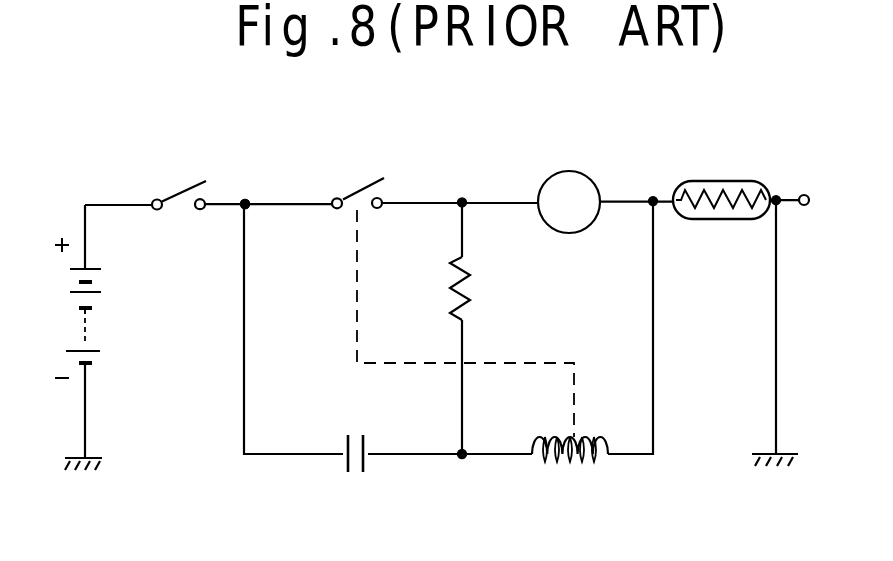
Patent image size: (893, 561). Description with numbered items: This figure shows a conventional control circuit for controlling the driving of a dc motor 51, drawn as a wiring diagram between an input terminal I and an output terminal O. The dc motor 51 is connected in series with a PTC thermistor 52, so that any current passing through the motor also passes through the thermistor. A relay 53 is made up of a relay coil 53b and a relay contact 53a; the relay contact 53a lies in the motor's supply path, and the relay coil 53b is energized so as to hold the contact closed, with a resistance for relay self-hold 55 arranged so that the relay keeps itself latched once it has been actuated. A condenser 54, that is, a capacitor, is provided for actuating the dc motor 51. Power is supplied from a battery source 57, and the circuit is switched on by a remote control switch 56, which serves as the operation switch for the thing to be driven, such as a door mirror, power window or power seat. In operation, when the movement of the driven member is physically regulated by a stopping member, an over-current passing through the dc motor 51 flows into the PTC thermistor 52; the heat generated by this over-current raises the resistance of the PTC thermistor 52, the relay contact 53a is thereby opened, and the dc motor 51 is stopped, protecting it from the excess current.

The dc motor 51 is at (617, 140).
The PTC thermistor 52 is at (726, 182).
The relay 53 is at (549, 361).
The relay contact 53a is at (352, 194).
The relay coil 53b is at (588, 438).
The condenser 54 is at (356, 434).
The resistance for relay self-hold 55 is at (471, 283).
The remote control switch 56 is at (190, 188).
The battery source 57 is at (82, 318).
The input terminal I is at (247, 201).
The output terminal O is at (804, 194).